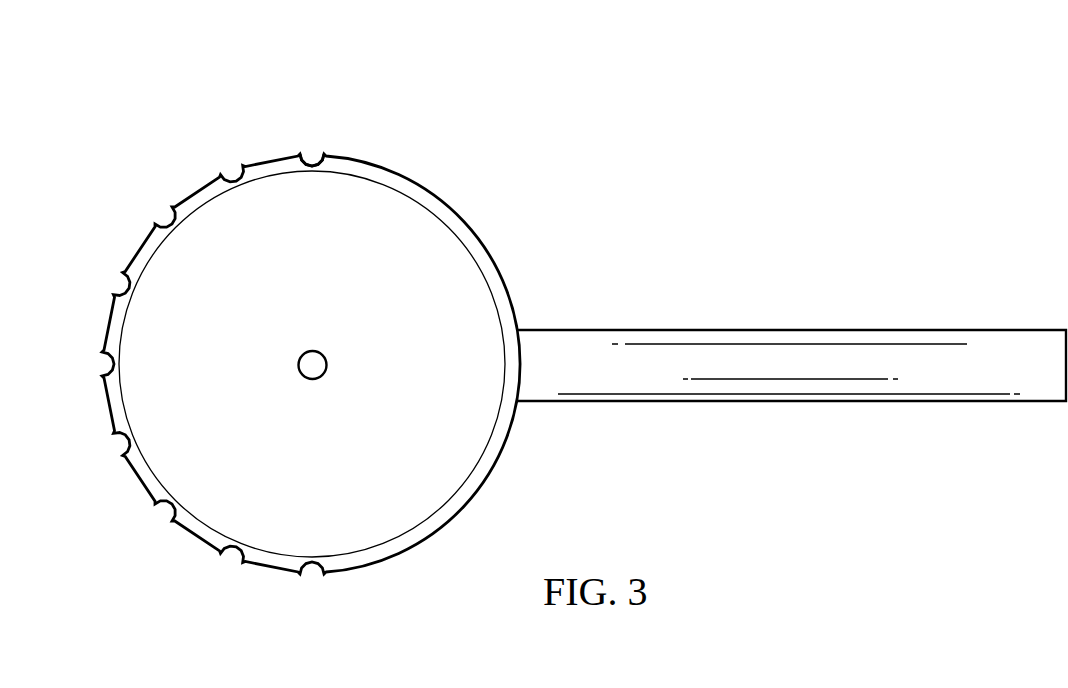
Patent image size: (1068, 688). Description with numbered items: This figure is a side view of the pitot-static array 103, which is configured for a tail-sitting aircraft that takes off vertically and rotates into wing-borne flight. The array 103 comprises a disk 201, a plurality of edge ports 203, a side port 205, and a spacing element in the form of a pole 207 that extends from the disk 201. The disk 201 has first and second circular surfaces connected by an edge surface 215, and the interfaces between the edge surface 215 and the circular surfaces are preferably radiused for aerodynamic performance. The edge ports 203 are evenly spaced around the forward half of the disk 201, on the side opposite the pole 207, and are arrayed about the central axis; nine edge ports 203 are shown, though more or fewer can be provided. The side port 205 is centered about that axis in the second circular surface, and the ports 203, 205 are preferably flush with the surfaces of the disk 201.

The pitot-static array 103 is at (543, 340).
The disk 201 is at (433, 553).
The edge ports 203 is at (308, 145).
The side port 205 is at (313, 380).
The pole 207 is at (790, 403).
The edge surface 215 is at (491, 481).